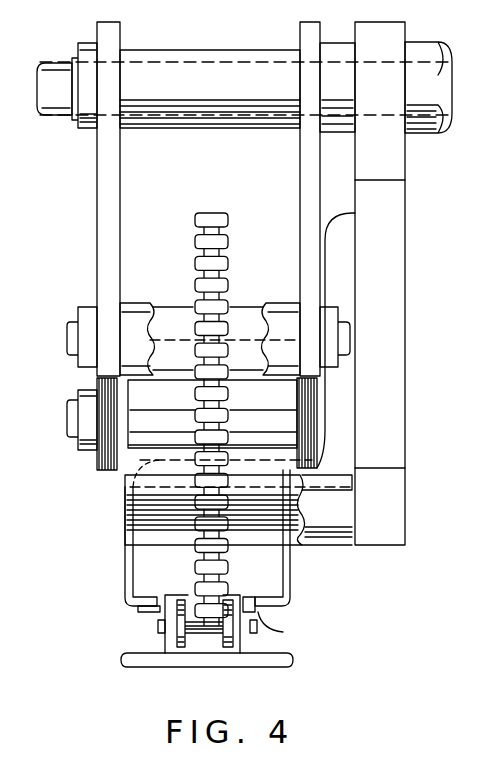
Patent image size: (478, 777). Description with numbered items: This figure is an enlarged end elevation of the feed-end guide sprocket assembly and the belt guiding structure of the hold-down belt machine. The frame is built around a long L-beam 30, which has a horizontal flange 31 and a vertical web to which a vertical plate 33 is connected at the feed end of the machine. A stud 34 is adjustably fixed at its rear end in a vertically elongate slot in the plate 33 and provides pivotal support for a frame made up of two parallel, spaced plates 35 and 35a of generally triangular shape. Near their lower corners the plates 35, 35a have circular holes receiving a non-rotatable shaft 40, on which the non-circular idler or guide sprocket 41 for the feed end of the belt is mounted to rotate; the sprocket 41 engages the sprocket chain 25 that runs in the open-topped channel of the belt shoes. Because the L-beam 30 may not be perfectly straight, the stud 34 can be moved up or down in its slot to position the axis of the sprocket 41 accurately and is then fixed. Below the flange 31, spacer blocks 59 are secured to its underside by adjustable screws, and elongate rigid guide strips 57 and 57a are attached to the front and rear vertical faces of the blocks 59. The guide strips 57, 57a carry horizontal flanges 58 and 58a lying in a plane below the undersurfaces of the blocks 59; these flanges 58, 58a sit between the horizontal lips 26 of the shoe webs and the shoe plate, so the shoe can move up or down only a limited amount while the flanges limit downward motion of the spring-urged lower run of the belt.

The sprocket chain 25 is at (205, 635).
The lip 26 is at (148, 604).
The L-beam 30 is at (332, 280).
The horizontal flange 31 is at (120, 473).
The vertical plate 33 is at (383, 218).
The stud 34 is at (60, 100).
The plate 35 is at (312, 227).
The plate 35a is at (100, 216).
The non-rotatable shaft 40 is at (68, 425).
The idler or guide sprocket 41 is at (195, 263).
The guide strip 57 is at (125, 548).
The guide strip 57a is at (292, 578).
The horizontal flange 58 is at (148, 614).
The horizontal flange 58a is at (283, 632).
The spacer block 59 is at (175, 568).